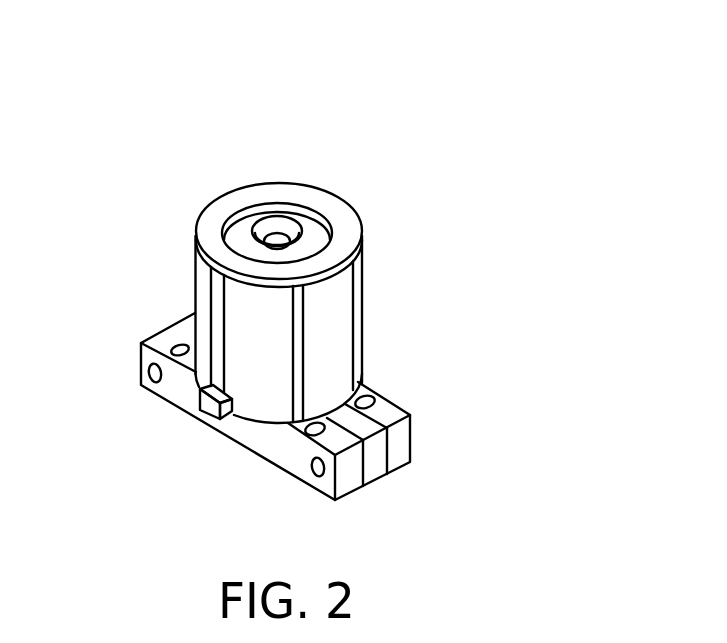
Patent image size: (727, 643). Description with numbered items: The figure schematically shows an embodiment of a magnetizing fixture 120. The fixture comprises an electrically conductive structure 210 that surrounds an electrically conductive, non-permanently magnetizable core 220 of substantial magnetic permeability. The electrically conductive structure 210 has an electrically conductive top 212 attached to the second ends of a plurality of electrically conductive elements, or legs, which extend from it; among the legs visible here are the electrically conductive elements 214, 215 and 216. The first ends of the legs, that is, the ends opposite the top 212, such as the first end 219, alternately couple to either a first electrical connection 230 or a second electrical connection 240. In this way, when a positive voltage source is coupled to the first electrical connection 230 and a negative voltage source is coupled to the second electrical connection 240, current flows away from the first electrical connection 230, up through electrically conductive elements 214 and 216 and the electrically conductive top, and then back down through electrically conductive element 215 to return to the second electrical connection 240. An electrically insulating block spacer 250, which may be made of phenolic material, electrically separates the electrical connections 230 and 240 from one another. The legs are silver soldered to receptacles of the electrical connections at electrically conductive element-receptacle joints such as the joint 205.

The magnetizing fixture 120 is at (354, 160).
The electrically conductive element-receptacle joint 205 is at (203, 409).
The electrically conductive structure 210 is at (366, 229).
The electrically conductive top 212 is at (202, 216).
The electrically conductive element 214 is at (365, 301).
The electrically conductive element 215 is at (306, 349).
The electrically conductive element 216 is at (218, 314).
The first end of electrically conductive element 219 is at (296, 428).
The core 220 is at (277, 212).
The first electrical connection 230 is at (397, 401).
The second electrical connection 240 is at (343, 500).
The electrically insulating block spacer 250 is at (371, 481).